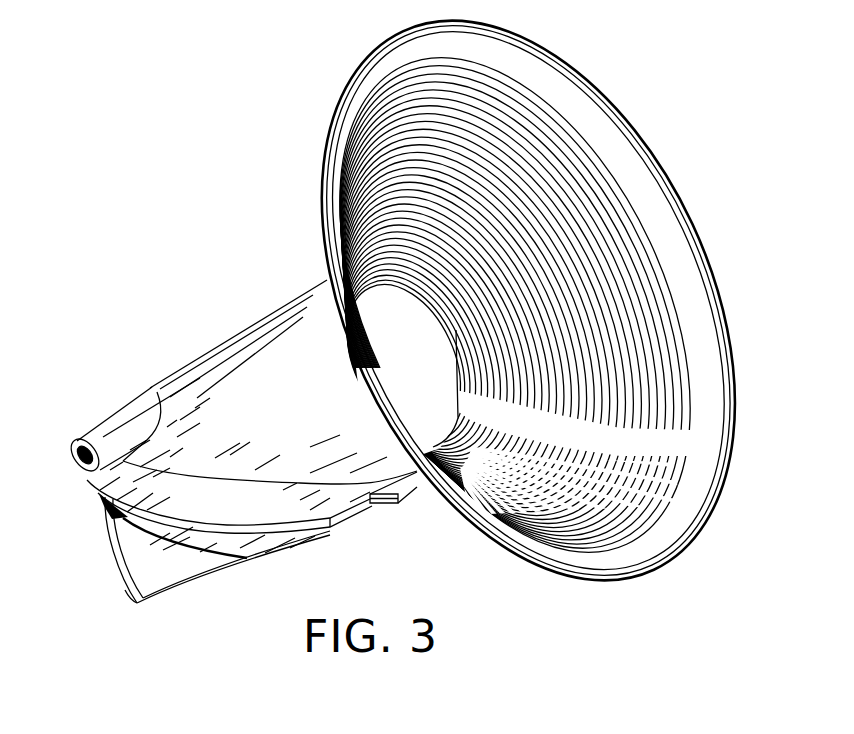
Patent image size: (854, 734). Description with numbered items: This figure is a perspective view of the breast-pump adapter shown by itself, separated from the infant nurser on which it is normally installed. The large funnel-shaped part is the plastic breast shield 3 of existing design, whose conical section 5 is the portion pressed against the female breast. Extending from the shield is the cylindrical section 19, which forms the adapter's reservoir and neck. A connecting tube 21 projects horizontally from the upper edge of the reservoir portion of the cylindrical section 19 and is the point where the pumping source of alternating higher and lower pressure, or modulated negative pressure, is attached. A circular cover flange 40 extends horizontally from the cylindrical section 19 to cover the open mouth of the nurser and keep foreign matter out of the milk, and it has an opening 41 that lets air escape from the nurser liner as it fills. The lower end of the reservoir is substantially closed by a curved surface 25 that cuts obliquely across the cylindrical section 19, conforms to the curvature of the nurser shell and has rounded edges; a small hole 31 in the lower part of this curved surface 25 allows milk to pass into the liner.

The breast shield 3 is at (658, 163).
The conical section 5 is at (590, 458).
The cylindrical section 19 is at (290, 434).
The connecting tube 21 is at (110, 438).
The curved surface 25 is at (114, 536).
The hole 31 is at (127, 596).
The circular cover flange 40 is at (212, 511).
The opening 41 is at (367, 513).